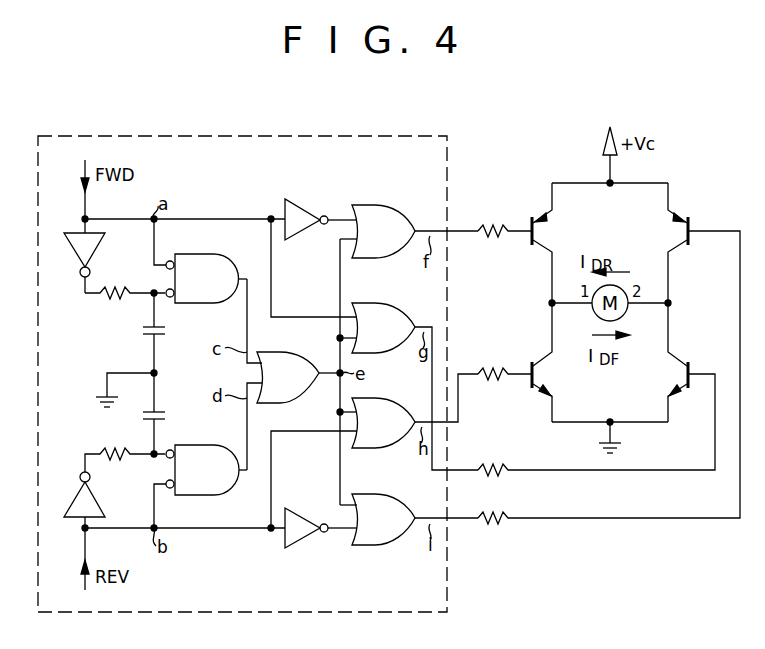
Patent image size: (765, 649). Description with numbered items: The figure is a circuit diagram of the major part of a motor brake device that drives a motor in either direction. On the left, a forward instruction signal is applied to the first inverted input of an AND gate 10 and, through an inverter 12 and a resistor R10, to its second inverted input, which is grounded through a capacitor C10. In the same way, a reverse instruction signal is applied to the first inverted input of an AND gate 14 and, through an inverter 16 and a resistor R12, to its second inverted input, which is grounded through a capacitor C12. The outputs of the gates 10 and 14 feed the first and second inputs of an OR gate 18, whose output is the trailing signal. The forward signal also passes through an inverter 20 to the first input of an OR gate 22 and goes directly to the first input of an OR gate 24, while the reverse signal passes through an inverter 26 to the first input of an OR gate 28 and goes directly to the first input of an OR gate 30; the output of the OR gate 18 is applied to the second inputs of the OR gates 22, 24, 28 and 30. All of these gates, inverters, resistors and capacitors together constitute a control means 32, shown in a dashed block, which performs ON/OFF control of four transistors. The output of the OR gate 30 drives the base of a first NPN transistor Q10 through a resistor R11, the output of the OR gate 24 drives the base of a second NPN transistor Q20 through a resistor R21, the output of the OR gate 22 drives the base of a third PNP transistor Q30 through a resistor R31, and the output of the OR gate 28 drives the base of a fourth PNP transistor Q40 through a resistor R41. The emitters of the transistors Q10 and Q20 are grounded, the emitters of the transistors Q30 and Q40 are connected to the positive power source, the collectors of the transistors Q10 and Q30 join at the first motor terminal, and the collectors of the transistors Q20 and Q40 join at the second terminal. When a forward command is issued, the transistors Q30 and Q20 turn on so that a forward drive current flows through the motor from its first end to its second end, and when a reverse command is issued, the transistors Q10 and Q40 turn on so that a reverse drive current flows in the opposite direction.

The control means 32 is at (240, 160).
The AND gate 10 is at (201, 256).
The inverter 12 is at (76, 250).
The AND gate 14 is at (208, 497).
The inverter 16 is at (74, 498).
The OR gate 18 is at (295, 356).
The inverter 20 is at (302, 201).
The OR gate 22 is at (384, 205).
The OR gate 24 is at (391, 304).
The inverter 26 is at (300, 548).
The OR gate 28 is at (381, 546).
The OR gate 30 is at (397, 447).
The resistor R10 is at (92, 298).
The resistor R12 is at (104, 451).
The capacitor C10 is at (168, 331).
The capacitor C12 is at (168, 418).
The resistor R31 is at (492, 235).
The resistor R11 is at (492, 368).
The resistor R21 is at (492, 464).
The resistor R41 is at (496, 526).
The third transistor Q30 is at (548, 232).
The fourth transistor Q40 is at (672, 232).
The first transistor Q10 is at (548, 382).
The second transistor Q20 is at (672, 378).